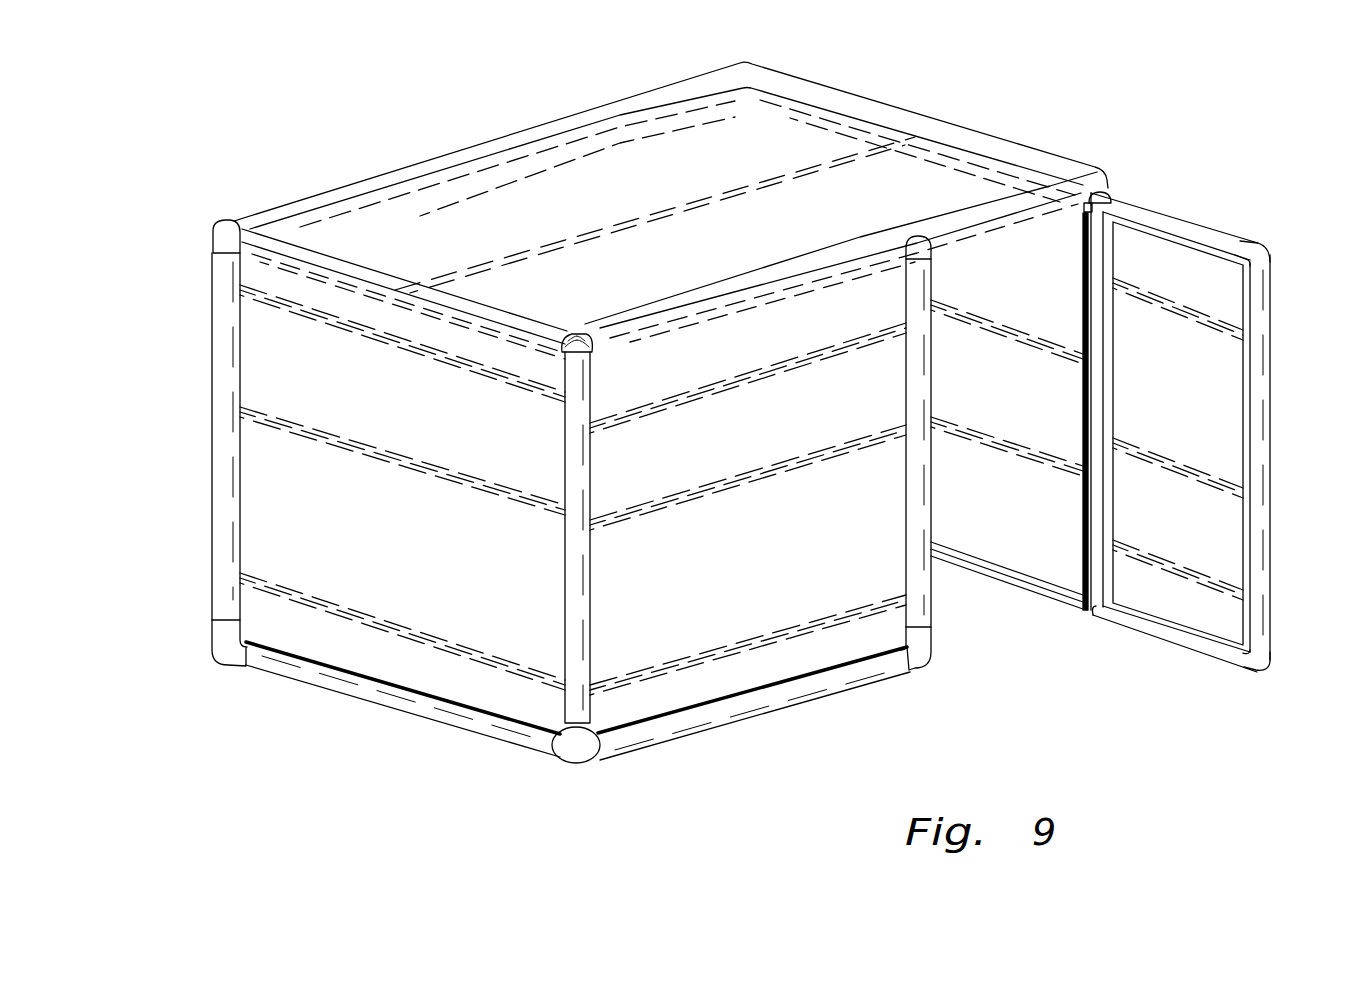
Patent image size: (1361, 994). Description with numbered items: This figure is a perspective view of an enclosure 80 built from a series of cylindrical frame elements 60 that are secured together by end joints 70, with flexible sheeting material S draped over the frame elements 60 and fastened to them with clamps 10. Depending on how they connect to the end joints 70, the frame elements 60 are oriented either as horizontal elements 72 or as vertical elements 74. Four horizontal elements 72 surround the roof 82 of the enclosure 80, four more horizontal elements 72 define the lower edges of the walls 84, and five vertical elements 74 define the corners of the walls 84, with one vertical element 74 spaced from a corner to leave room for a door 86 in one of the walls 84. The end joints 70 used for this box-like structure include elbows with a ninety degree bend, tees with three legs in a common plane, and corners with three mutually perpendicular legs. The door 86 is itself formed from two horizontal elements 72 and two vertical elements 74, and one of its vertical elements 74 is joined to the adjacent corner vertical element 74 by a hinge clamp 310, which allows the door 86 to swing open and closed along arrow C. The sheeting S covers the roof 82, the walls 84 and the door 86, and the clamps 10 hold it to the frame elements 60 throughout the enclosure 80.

The enclosure 80 is at (236, 145).
The horizontal elements 72 is at (380, 176).
The roof 82 is at (645, 189).
The sheeting material S is at (476, 223).
The vertical elements 74 is at (222, 428).
The walls 84 is at (374, 530).
The clamp 10 is at (214, 530).
The end joints 70 is at (220, 222).
The frame element 60 is at (743, 280).
The door 86 is at (1145, 437).
The hinge clamp 310 is at (1083, 550).
The arrow C is at (1205, 678).